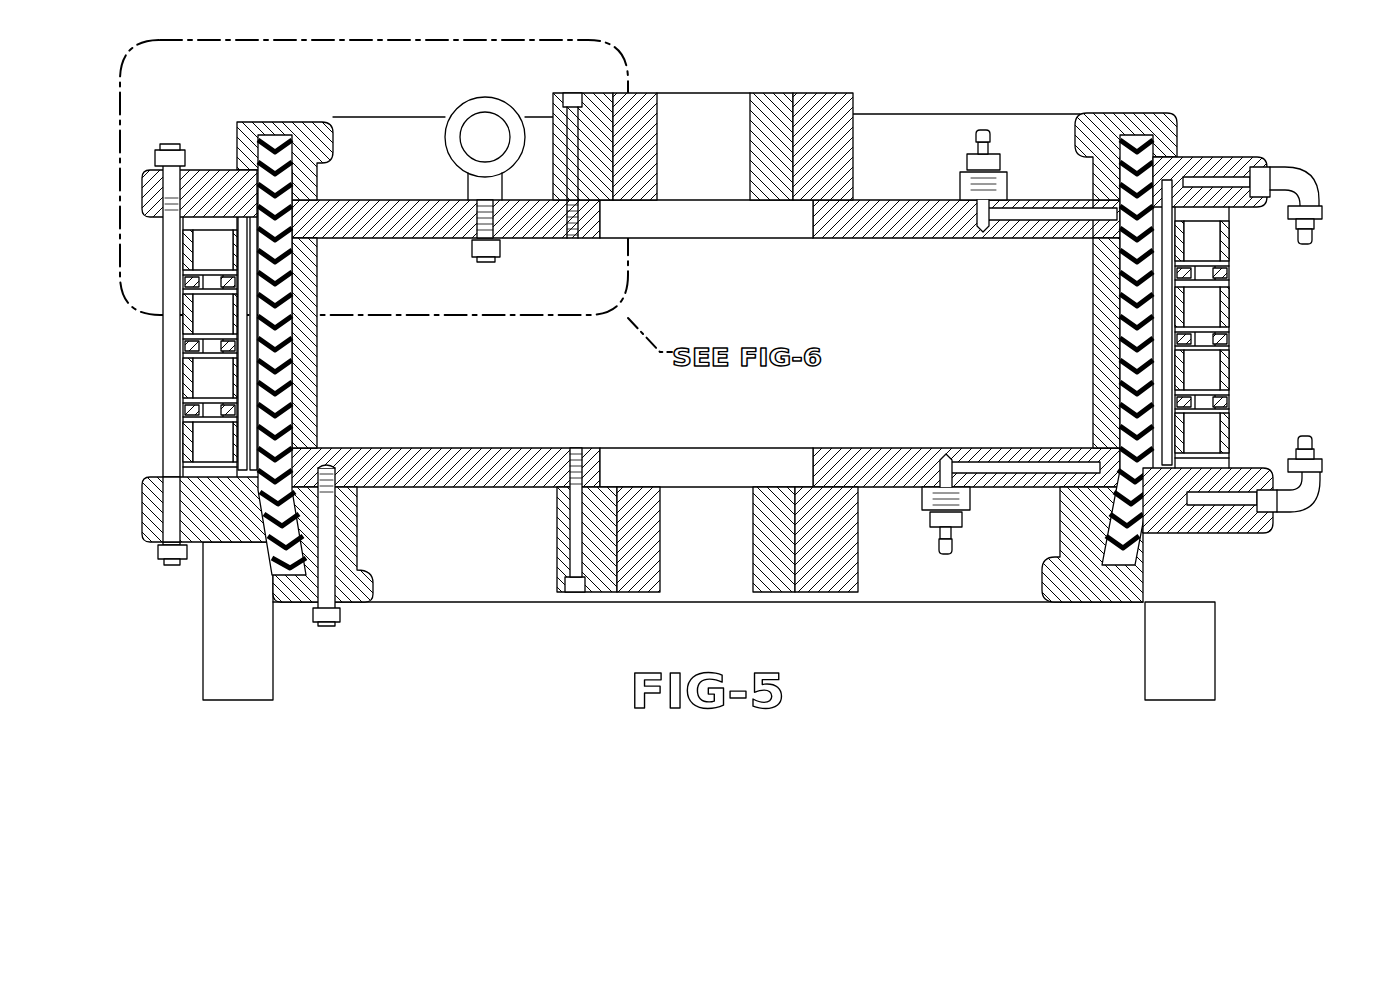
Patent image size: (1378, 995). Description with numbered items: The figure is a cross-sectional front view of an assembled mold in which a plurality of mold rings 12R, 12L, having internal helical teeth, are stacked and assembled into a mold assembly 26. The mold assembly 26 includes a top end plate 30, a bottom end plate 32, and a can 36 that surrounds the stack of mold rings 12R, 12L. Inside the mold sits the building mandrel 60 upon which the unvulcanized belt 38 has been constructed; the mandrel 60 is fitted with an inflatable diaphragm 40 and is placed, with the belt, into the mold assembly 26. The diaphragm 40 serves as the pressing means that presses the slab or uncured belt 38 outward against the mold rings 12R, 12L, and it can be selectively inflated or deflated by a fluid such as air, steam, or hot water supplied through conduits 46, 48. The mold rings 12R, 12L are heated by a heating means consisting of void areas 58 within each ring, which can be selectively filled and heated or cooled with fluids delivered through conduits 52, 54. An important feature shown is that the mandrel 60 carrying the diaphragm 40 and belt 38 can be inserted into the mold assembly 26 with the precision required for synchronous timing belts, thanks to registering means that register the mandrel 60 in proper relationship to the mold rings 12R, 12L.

The mold assembly 26 is at (1222, 56).
The top end plate 30 is at (207, 175).
The bottom end plate 32 is at (150, 513).
The can 36 is at (257, 128).
The uncured belt 38 is at (1140, 292).
The inflatable diaphragm 40 is at (285, 152).
The conduit 46 is at (1042, 215).
The conduit 48 is at (1000, 465).
The conduit 52 is at (1221, 178).
The conduit 54 is at (1242, 500).
The void areas 58 is at (1203, 238).
The building mandrel 60 is at (312, 378).
The mold ring 12R is at (1225, 268).
The mold ring 12L is at (1227, 310).